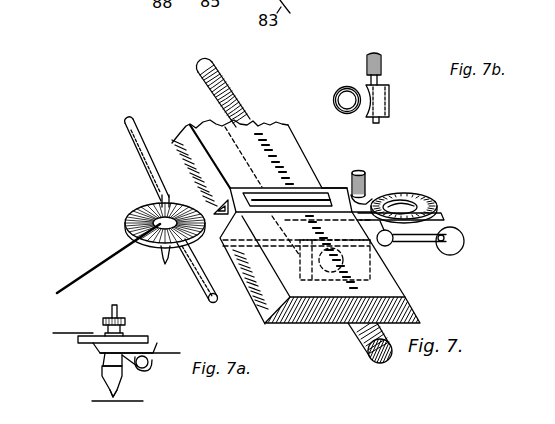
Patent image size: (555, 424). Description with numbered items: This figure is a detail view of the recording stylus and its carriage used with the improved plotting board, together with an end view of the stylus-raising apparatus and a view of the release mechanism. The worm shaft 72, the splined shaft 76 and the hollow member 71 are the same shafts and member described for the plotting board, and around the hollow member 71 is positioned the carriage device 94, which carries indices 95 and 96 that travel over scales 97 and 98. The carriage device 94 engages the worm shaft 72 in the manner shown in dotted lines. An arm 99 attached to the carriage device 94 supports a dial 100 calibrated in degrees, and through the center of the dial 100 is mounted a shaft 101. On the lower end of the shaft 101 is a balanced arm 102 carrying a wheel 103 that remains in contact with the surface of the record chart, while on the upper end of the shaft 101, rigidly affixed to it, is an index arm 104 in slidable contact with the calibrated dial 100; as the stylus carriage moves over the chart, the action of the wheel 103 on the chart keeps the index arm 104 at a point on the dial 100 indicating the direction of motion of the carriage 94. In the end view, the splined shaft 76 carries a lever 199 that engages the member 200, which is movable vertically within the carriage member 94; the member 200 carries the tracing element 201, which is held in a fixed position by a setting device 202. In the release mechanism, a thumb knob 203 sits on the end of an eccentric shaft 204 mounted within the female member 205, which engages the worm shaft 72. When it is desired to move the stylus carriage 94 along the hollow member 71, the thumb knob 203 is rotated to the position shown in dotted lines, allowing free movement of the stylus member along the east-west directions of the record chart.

In FIG. 7, the hollow member 71 is at (279, 139).
In FIG. 7, the worm shaft 72 is at (220, 90).
In FIG. 7B, the worm shaft 72 is at (340, 99).
In FIG. 7, the splined shaft 76 is at (141, 160).
In FIG. 7A, the splined shaft 76 is at (150, 368).
In FIG. 7, the carriage device 94 is at (335, 197).
In FIG. 7A, the carriage device 94 is at (164, 343).
In FIG. 7, the index 95 is at (215, 207).
In FIG. 7, the index 96 is at (313, 200).
In FIG. 7, the scale 97 is at (246, 291).
In FIG. 7, the scale 98 is at (286, 162).
In FIG. 7, the arm 99 is at (445, 211).
In FIG. 7, the dial 100 is at (441, 208).
In FIG. 7, the shaft 101 is at (400, 241).
In FIG. 7, the balanced arm 102 is at (430, 242).
In FIG. 7, the wheel 103 is at (464, 245).
In FIG. 7, the index arm 104 is at (421, 195).
In FIG. 7A, the lever 199 is at (134, 365).
In FIG. 7A, the member 200 is at (103, 378).
In FIG. 7A, the tracing element 201 is at (110, 396).
In FIG. 7A, the setting device 202 is at (124, 320).
In FIG. 7, the thumb knob 203 is at (367, 181).
In FIG. 7B, the thumb knob 203 is at (380, 57).
In FIG. 7, the eccentric shaft 204 is at (368, 199).
In FIG. 7B, the eccentric shaft 204 is at (378, 81).
In FIG. 7, the female member 205 is at (361, 266).
In FIG. 7B, the female member 205 is at (389, 102).